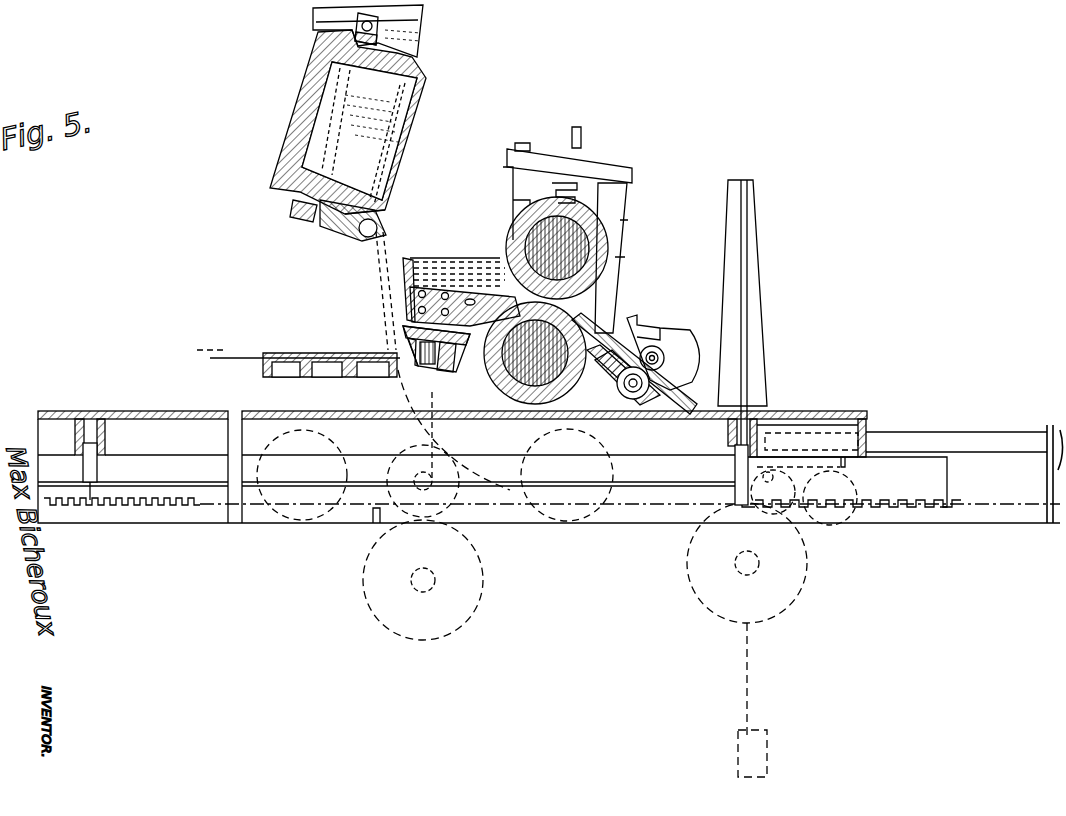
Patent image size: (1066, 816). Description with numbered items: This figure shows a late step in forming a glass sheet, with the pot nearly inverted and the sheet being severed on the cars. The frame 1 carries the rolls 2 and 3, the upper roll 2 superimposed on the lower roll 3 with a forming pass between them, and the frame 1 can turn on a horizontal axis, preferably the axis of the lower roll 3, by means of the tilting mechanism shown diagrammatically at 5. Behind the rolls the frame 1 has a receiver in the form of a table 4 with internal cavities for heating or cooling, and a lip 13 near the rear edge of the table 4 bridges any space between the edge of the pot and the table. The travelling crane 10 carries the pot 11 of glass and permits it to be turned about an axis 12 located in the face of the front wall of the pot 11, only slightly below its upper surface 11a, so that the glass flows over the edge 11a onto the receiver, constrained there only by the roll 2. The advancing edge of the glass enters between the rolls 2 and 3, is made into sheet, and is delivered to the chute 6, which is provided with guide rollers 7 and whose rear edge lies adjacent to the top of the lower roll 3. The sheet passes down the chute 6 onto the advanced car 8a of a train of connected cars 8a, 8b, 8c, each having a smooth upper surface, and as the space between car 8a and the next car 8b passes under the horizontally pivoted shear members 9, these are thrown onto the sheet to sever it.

The frame 1 is at (590, 163).
The roll 2 is at (600, 218).
The roll 3 is at (615, 310).
The table 4 is at (462, 285).
The mechanism 5 is at (443, 455).
The chute 6 is at (680, 392).
The guide rollers 7 is at (683, 310).
The car 8a is at (815, 430).
The car 8b is at (327, 502).
The car 8c is at (103, 515).
The shear member 9 is at (755, 292).
The travelling crane 10 is at (410, 45).
The pot 11 is at (310, 88).
The upper surface 11a is at (383, 214).
The axis 12 is at (360, 232).
The lip 13 is at (418, 262).